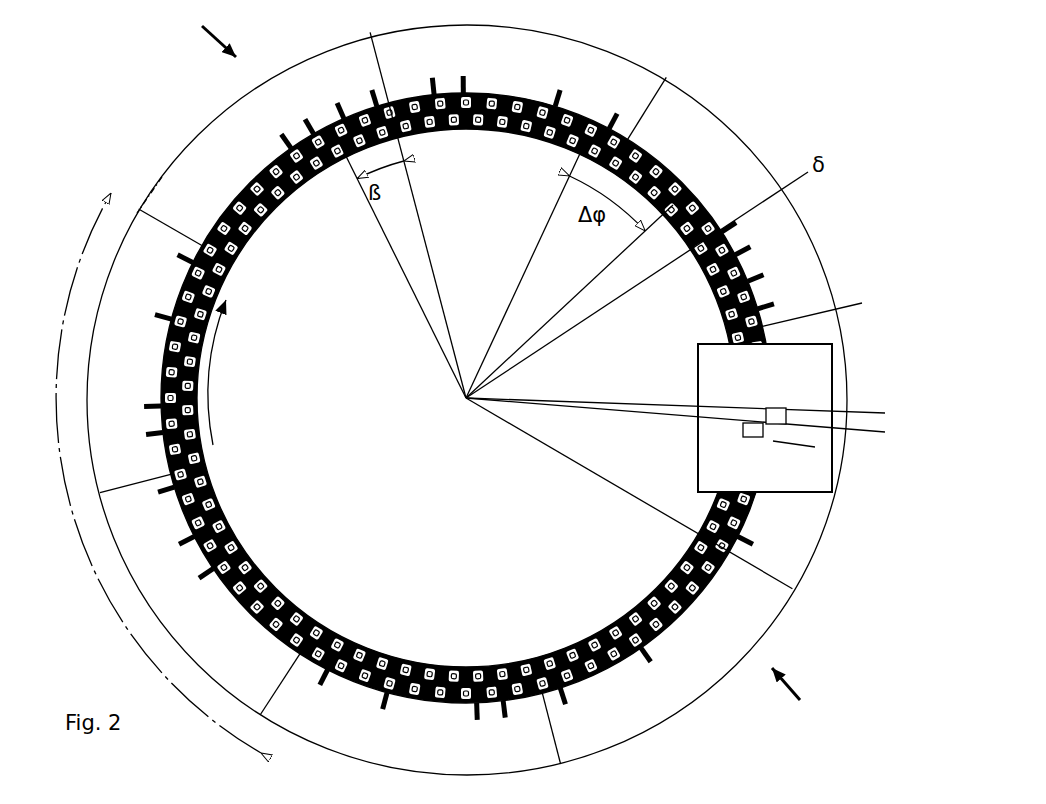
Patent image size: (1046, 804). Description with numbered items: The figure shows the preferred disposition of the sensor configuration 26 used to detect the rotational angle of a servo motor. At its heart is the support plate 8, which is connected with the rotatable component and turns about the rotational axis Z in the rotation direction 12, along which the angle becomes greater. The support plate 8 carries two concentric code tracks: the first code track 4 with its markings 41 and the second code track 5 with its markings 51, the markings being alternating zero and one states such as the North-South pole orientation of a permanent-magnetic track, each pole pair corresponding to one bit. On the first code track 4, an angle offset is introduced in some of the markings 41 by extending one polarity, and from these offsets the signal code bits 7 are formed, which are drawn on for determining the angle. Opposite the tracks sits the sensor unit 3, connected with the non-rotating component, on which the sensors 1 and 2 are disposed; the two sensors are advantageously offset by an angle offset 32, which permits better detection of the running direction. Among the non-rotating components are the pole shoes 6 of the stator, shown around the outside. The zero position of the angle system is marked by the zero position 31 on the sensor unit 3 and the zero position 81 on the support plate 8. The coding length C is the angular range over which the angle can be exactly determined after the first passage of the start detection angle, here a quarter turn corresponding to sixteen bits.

The sensor 1 is at (780, 409).
The sensor 2 is at (756, 437).
The sensor unit 3 is at (741, 476).
The first code track 4 is at (208, 227).
The markings 41 is at (237, 197).
The second code track 5 is at (248, 551).
The markings 51 is at (297, 602).
The pole shoes 6 is at (527, 64).
The signal code bits 7 is at (755, 245).
The support plate 8 is at (356, 349).
The rotation direction 12 is at (209, 408).
The sensor configuration 26 is at (500, 368).
The zero position 31 is at (797, 450).
The angle offset 32 is at (693, 420).
The zero position 81 is at (562, 456).
The rotational axis Z is at (462, 399).
The coding length C is at (139, 473).